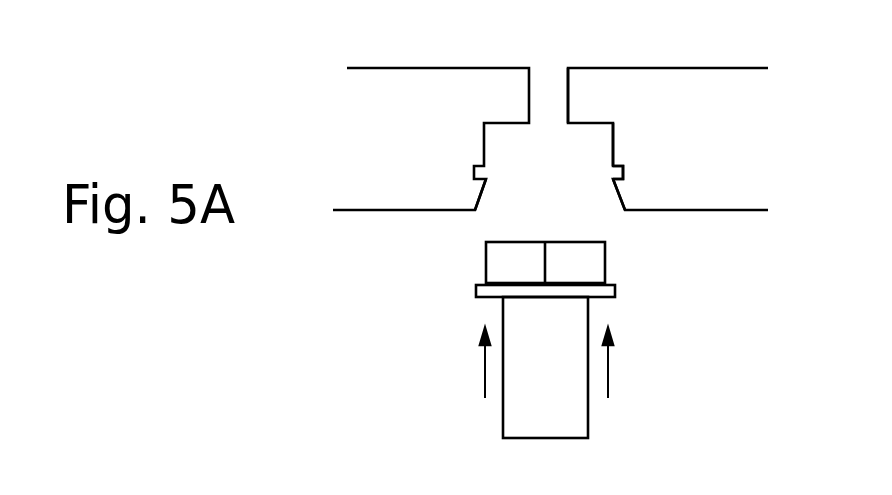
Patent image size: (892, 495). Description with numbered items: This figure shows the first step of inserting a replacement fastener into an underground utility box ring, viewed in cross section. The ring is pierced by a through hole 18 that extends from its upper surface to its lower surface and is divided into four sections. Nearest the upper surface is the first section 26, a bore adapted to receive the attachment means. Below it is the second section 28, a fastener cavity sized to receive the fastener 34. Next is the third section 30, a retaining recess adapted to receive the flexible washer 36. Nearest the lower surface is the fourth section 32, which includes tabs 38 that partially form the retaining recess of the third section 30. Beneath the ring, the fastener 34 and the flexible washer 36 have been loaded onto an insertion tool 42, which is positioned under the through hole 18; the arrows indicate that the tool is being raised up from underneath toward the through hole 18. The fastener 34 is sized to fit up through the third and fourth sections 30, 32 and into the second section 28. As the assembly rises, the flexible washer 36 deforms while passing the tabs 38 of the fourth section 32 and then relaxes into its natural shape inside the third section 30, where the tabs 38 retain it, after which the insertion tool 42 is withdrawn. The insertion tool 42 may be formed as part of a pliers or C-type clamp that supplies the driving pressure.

The through hole 18 is at (549, 63).
The first section 26 is at (552, 88).
The second section 28 is at (609, 138).
The third section 30 is at (618, 173).
The fourth section 32 is at (610, 200).
The fastener 34 is at (490, 250).
The flexible washer 36 is at (478, 290).
The tabs 38 is at (475, 190).
The insertion tool 42 is at (546, 367).